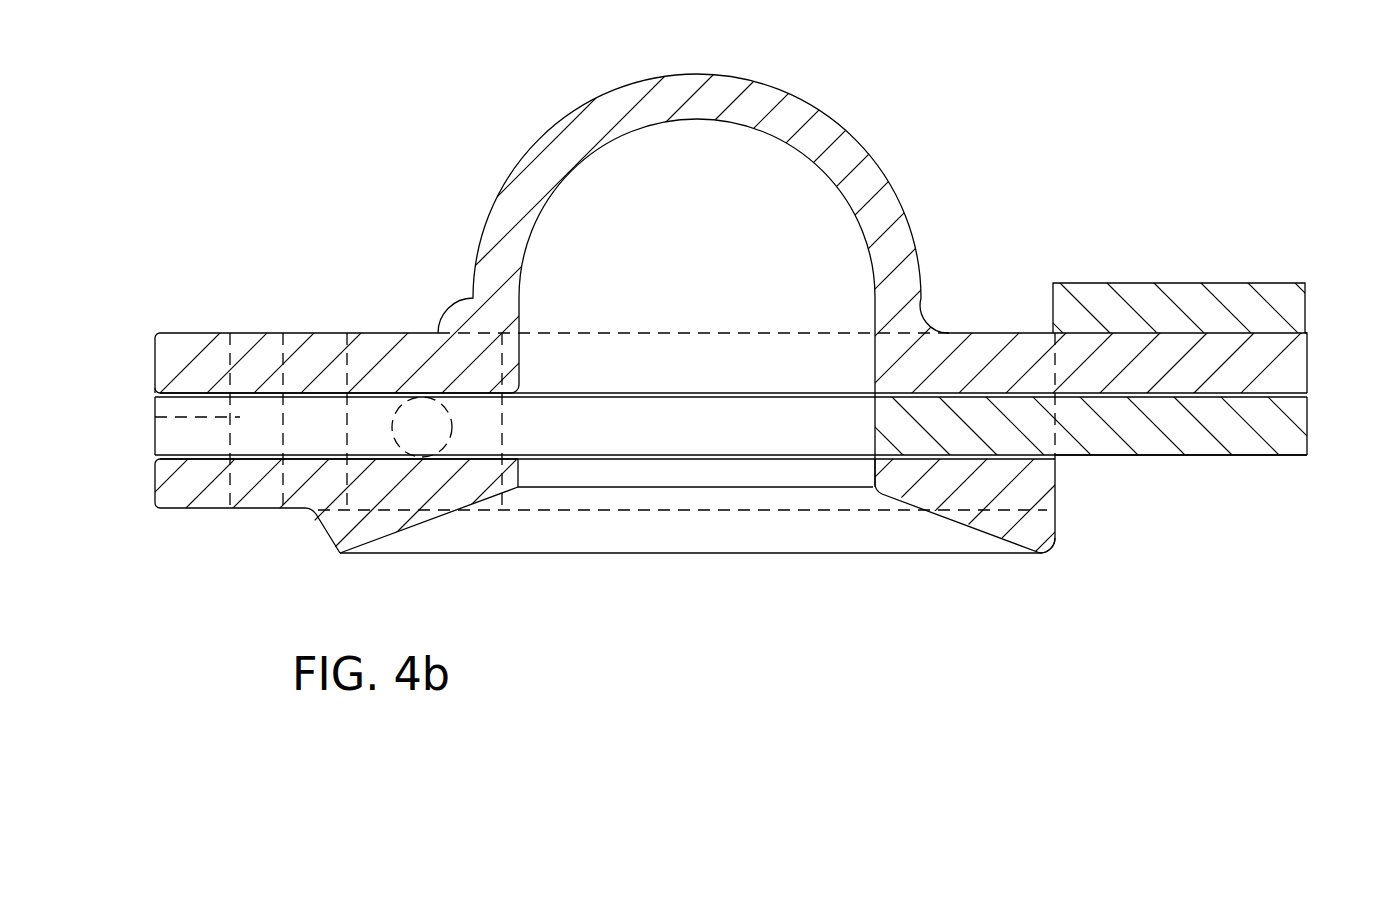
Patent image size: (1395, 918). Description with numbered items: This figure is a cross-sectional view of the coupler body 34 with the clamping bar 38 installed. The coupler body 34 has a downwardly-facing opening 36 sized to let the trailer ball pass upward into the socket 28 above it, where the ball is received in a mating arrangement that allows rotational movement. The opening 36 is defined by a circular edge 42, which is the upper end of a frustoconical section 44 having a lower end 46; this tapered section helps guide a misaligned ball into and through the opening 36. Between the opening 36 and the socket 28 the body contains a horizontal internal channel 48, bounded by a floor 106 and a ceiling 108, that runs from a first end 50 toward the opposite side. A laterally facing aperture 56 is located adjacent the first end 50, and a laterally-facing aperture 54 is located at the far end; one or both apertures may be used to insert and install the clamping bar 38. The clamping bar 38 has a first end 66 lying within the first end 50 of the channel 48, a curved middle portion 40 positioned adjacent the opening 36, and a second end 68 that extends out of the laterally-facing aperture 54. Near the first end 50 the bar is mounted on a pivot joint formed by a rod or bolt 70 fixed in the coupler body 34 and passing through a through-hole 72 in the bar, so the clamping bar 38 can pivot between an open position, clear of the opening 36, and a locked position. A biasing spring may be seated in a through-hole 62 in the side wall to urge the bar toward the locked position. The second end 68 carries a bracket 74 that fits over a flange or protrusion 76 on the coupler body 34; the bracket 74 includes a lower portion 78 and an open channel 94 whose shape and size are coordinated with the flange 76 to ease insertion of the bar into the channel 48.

The socket 28 is at (692, 226).
The coupler body 34 is at (200, 330).
The downwardly-facing opening 36 is at (576, 580).
The clamping bar 38 is at (480, 417).
The curved middle portion 40 is at (610, 397).
The circular edge 42 is at (873, 495).
The frustoconical section 44 is at (955, 523).
The lower end 46 is at (1046, 555).
The internal channel 48 is at (800, 458).
The first end 50 is at (152, 393).
The laterally-facing aperture 54 is at (1062, 461).
The laterally facing aperture 56 is at (158, 437).
The through-hole 62 is at (392, 397).
The first end 66 is at (298, 405).
The second end 68 is at (1188, 457).
The rod or bolt 70 is at (253, 497).
The through-hole 72 is at (240, 410).
The bracket 74 is at (1110, 283).
The flange or protrusion 76 is at (1293, 360).
The lower portion 78 is at (1267, 456).
The open channel 94 is at (1312, 332).
The floor 106 is at (313, 477).
The ceiling 108 is at (367, 392).